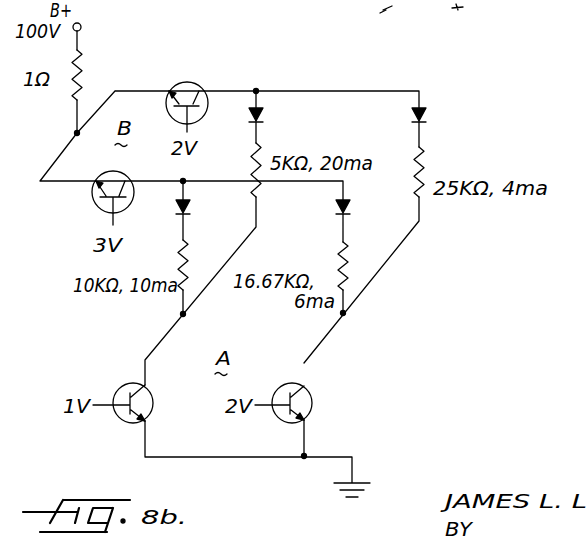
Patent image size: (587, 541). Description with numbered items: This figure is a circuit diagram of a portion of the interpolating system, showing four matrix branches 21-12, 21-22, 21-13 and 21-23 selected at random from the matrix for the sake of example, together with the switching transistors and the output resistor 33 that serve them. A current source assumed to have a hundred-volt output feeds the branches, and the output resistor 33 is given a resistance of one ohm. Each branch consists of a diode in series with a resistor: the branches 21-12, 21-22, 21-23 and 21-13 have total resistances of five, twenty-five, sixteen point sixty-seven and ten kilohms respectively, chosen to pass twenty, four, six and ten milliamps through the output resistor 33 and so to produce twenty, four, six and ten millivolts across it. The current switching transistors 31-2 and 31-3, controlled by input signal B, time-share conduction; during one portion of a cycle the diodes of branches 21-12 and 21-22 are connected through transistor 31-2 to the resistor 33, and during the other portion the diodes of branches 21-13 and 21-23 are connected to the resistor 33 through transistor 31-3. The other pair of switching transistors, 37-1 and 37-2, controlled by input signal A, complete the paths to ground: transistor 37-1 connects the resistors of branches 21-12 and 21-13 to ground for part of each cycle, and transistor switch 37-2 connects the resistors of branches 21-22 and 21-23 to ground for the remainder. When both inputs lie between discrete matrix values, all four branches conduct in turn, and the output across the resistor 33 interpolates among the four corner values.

The output resistor 33 is at (82, 72).
The current switching transistor 31-2 is at (190, 81).
The current switching transistor 31-3 is at (93, 200).
The matrix branch 21-12 is at (272, 116).
The matrix branch 21-22 is at (434, 138).
The matrix branch 21-13 is at (175, 300).
The matrix branch 21-23 is at (359, 281).
The switching transistor 37-1 is at (125, 423).
The transistor switch 37-2 is at (312, 405).